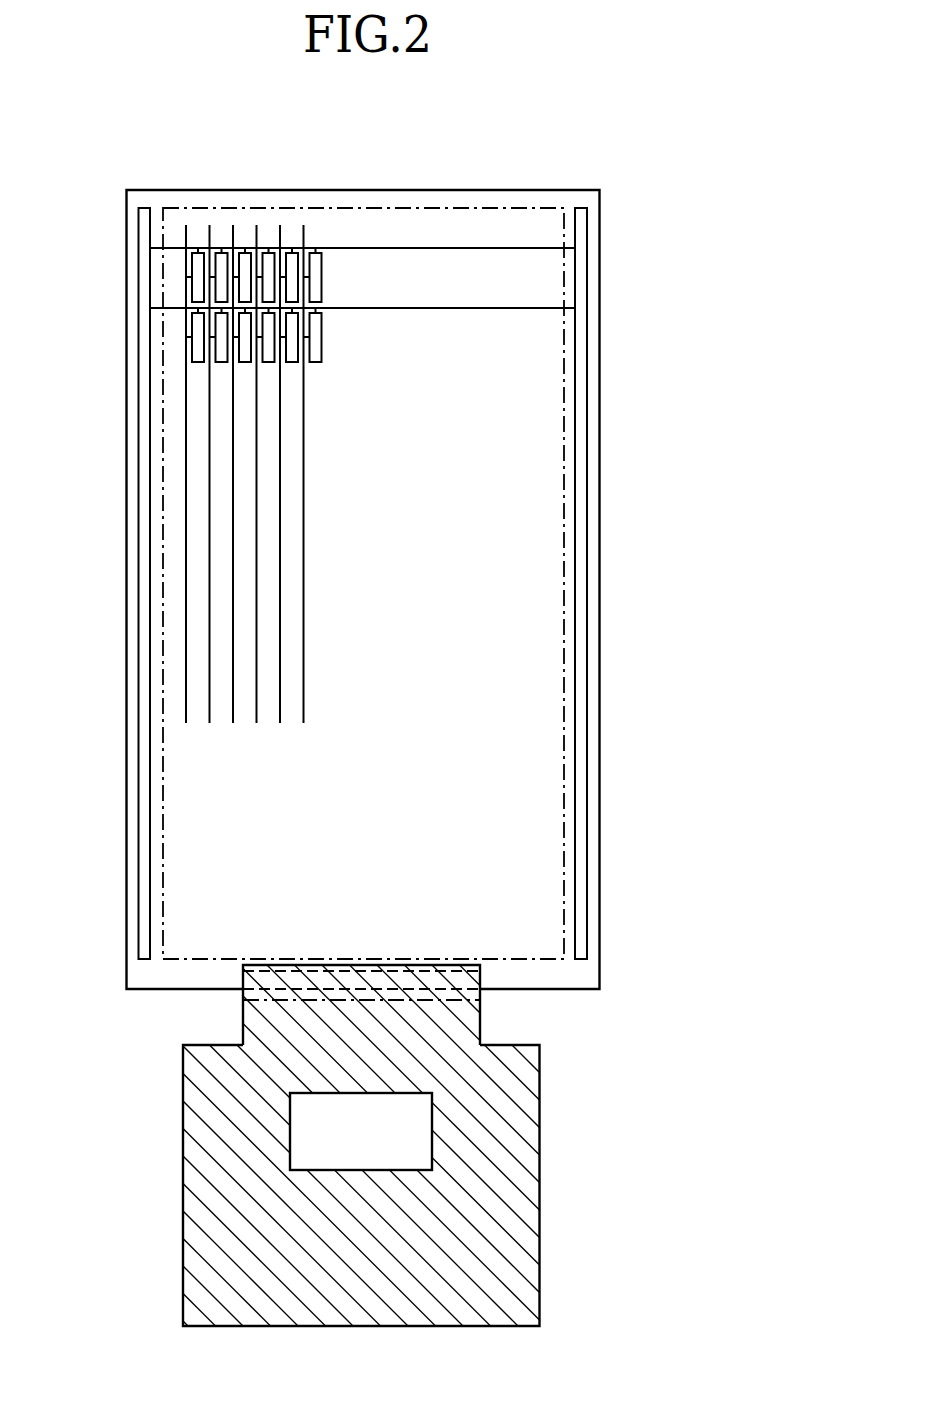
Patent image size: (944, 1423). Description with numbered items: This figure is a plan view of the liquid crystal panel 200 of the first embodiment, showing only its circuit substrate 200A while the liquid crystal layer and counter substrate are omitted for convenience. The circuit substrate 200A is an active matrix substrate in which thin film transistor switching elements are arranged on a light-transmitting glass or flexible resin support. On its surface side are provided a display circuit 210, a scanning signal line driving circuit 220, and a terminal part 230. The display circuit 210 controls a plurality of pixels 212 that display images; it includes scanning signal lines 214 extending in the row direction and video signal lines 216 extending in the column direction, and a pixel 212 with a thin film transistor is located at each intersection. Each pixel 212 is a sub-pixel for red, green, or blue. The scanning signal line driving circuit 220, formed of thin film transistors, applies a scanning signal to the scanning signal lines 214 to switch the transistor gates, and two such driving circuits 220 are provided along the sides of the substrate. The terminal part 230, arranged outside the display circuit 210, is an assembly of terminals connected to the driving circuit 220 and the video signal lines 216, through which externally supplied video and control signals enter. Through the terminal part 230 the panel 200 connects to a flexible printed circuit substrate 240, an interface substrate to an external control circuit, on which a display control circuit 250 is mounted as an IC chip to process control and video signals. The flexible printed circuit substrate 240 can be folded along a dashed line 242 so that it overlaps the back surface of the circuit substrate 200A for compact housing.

The liquid crystal panel 200 is at (550, 153).
The circuit substrate 200A is at (294, 190).
The display circuit 210 is at (452, 207).
The pixel 212 is at (322, 282).
The scanning signal line 214 is at (463, 310).
The video signal line 216 is at (306, 487).
The scanning signal line driving circuit 220 is at (145, 347).
The terminal part 230 is at (436, 977).
The flexible printed circuit substrate 240 is at (527, 1178).
The dashed line 242 is at (280, 1000).
The display control circuit 250 is at (417, 1129).